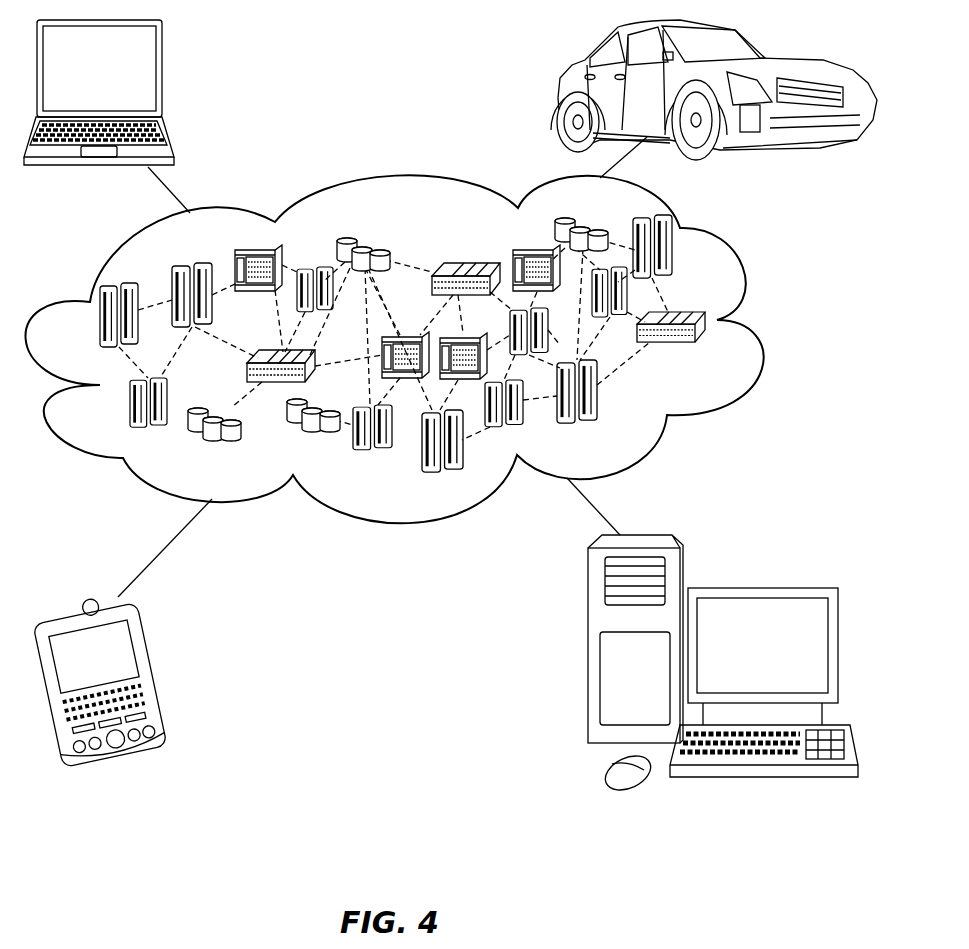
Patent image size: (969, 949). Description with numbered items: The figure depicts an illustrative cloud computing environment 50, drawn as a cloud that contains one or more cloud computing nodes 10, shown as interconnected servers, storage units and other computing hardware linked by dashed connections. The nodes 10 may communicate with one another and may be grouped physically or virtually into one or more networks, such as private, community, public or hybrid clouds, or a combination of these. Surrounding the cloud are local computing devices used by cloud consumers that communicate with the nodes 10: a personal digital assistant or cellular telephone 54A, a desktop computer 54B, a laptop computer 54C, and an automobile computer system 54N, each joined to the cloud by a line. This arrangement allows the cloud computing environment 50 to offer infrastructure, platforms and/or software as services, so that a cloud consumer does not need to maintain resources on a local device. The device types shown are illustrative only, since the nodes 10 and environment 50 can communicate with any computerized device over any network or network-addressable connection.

The cloud computing nodes 10 is at (722, 353).
The cloud computing environment 50 is at (762, 325).
The personal digital assistant (PDA) or cellular telephone 54A is at (150, 672).
The desktop computer 54B is at (762, 588).
The laptop computer 54C is at (162, 76).
The automobile computer system 54N is at (562, 87).